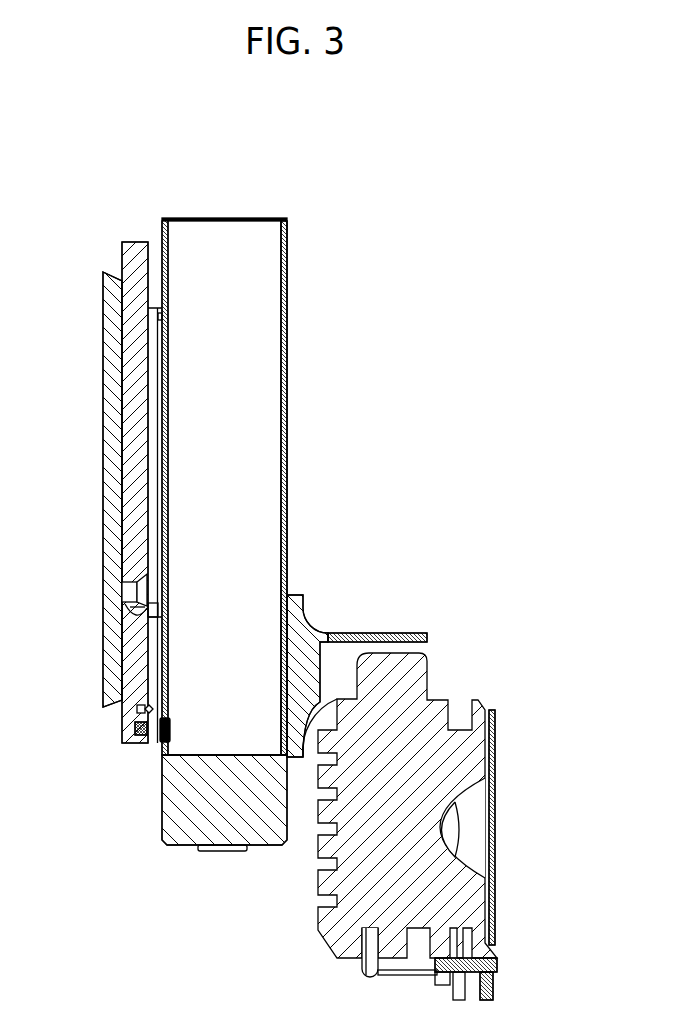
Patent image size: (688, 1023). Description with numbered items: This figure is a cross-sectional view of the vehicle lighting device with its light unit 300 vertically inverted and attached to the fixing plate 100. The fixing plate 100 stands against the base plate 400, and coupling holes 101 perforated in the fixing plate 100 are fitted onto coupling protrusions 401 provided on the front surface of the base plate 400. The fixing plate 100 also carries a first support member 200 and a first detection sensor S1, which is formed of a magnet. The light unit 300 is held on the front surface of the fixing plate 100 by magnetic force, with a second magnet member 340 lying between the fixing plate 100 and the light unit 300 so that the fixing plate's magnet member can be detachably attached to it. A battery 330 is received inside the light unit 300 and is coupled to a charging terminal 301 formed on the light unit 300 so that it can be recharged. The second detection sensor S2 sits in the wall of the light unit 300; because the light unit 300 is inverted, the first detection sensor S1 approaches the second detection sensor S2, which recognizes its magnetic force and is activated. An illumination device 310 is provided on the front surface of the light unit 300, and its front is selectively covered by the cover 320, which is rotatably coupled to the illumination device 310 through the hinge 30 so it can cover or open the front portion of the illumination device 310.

The fixing plate 100 is at (130, 232).
The base plate 400 is at (96, 308).
The light unit 300 is at (296, 240).
The battery 330 is at (263, 417).
The second magnet member 340 is at (153, 465).
The coupling protrusion 401 is at (143, 580).
The coupling hole 101 is at (135, 613).
The first support member 200 is at (138, 706).
The first detection sensor S1 is at (135, 728).
The second detection sensor S2 is at (171, 724).
The charging terminal 301 is at (232, 852).
The illumination device 310 is at (462, 758).
The cover 320 is at (496, 845).
The hinge 30 is at (494, 972).